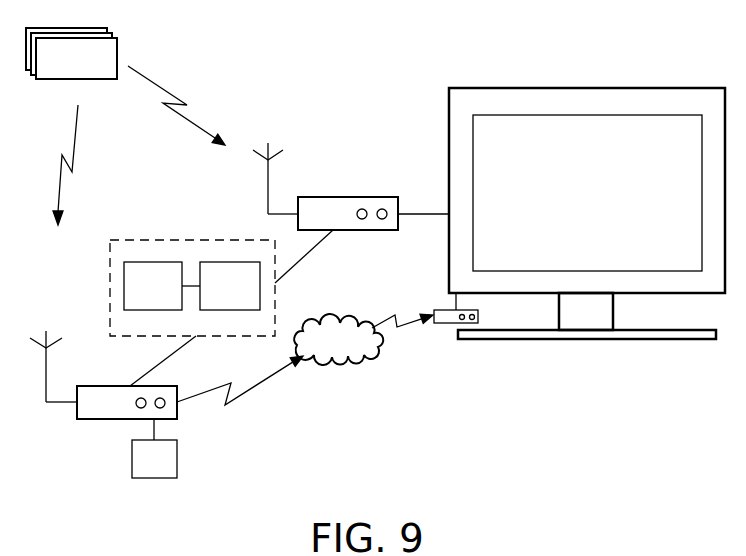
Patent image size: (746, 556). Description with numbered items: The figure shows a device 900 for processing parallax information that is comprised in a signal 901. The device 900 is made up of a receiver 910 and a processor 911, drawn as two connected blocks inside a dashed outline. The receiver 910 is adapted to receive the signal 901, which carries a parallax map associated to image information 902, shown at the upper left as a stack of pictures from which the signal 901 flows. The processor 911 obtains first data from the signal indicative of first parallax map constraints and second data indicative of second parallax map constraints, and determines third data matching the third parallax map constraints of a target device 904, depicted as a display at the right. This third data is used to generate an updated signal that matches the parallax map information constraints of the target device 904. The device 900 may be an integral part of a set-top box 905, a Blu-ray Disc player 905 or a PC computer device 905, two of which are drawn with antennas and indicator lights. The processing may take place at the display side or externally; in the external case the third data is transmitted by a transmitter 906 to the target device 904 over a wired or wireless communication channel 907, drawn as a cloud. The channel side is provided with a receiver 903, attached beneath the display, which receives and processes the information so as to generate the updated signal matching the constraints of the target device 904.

The device 900 is at (110, 292).
The signal 901 is at (173, 95).
The image information 902 is at (118, 47).
The receiver 903 is at (455, 325).
The target device 904 is at (593, 88).
The set-top box 905 is at (346, 197).
The transmitter 906 is at (178, 458).
The communication channel 907 is at (335, 357).
The receiver 910 is at (148, 262).
The processor 911 is at (226, 262).